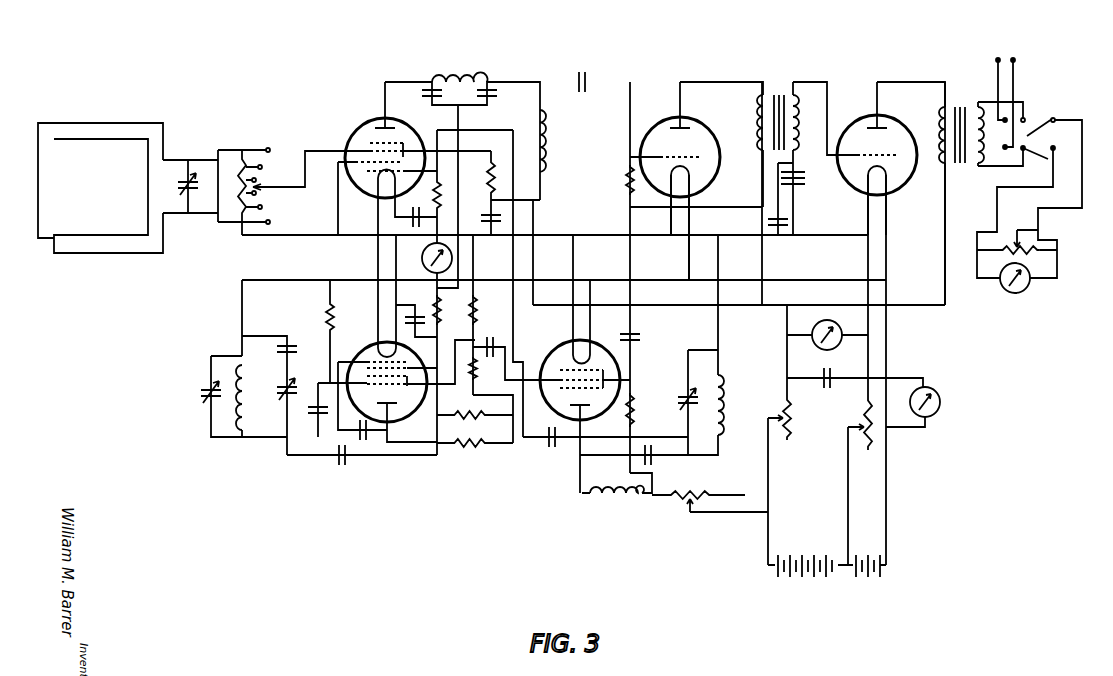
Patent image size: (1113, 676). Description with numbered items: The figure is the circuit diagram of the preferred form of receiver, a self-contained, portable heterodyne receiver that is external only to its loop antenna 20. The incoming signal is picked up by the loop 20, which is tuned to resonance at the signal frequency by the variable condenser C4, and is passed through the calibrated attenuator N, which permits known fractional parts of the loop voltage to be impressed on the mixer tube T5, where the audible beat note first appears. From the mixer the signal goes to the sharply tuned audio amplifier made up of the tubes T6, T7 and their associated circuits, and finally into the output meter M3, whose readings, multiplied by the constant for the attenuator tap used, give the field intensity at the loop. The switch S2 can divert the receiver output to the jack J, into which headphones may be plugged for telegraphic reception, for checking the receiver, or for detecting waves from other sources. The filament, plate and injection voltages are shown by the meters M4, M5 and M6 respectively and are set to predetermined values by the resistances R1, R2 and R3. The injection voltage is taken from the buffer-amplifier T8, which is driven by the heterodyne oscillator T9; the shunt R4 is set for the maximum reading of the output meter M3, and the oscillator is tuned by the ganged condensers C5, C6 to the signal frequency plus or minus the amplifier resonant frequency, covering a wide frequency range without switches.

The loop antenna 20 is at (128, 123).
The variable condenser C4 is at (199, 187).
The calibrated attenuator N is at (265, 203).
The mixer tube T5 is at (365, 130).
The audio amplifier tube T6 is at (683, 121).
The audio amplifier tube T7 is at (880, 121).
The buffer-amplifier T8 is at (620, 364).
The heterodyne oscillator T9 is at (375, 342).
The ganged condenser C5 is at (283, 383).
The ganged condenser C6 is at (679, 399).
The output meter M3 is at (1028, 290).
The filament voltage meter M4 is at (937, 395).
The plate voltage meter M5 is at (818, 353).
The injection voltage meter M6 is at (421, 258).
The filament voltage adjusting resistor R1 is at (800, 415).
The plate voltage adjusting resistor R2 is at (865, 422).
The injection voltage adjusting resistor R3 is at (680, 493).
The shunt R4 is at (1022, 256).
The switch S2 is at (1029, 135).
The jack J is at (1005, 93).